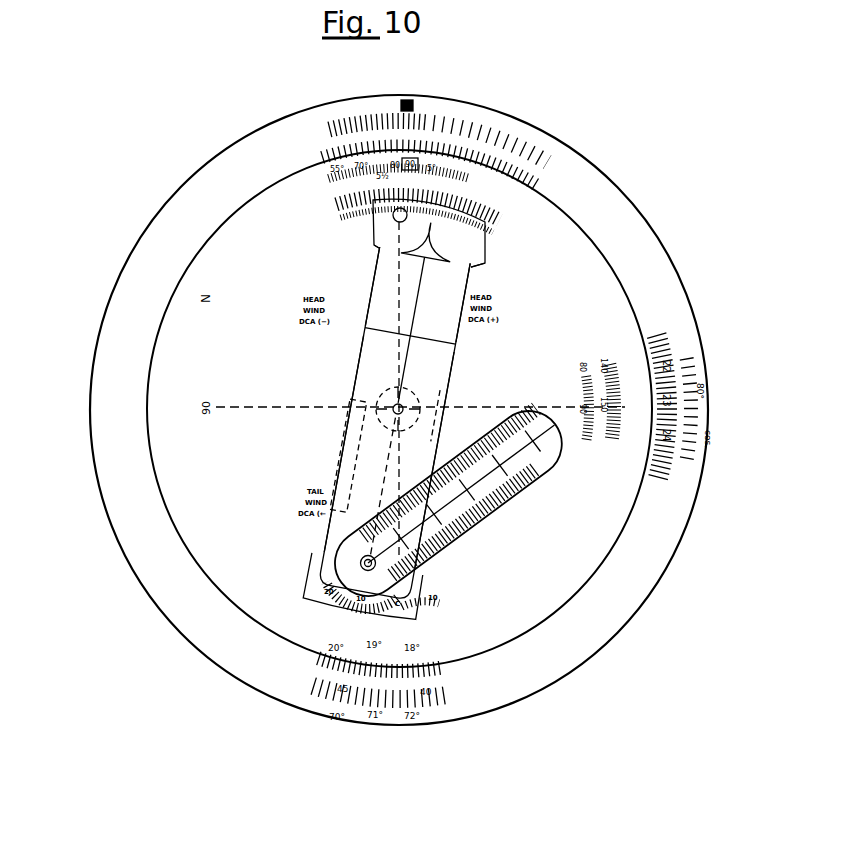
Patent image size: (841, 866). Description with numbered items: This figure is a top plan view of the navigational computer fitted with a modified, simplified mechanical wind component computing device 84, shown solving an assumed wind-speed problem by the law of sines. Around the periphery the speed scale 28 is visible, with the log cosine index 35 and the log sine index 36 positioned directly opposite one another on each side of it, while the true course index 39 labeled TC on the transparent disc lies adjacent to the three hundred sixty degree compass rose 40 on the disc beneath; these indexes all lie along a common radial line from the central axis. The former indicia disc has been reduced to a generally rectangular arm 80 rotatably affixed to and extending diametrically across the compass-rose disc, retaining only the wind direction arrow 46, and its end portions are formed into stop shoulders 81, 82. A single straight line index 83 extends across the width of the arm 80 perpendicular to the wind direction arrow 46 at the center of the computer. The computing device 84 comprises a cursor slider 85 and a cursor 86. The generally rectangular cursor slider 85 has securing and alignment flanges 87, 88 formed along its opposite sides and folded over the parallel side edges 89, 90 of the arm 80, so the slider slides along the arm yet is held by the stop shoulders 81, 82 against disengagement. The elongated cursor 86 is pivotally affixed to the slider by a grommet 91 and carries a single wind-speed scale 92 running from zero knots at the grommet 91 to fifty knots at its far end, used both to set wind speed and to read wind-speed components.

The speed scale 28 is at (382, 138).
The index 35 is at (408, 100).
The index 36 is at (433, 158).
The true course index 39 is at (395, 203).
The compass rose 40 is at (370, 192).
The wind direction arrow 46 is at (428, 239).
The arm 80 is at (395, 423).
The stop shoulder 81 is at (376, 246).
The stop shoulder 82 is at (373, 589).
The straight line index 83 is at (375, 424).
The wind-speed component computing device 84 is at (448, 503).
The cursor slider 85 is at (348, 455).
The cursor 86 is at (463, 492).
The securing and alignment flange 87 is at (343, 444).
The securing and alignment flange 88 is at (434, 460).
The side edge 89 is at (372, 286).
The side edge 90 is at (463, 302).
The grommet 91 is at (356, 566).
The wind-speed scale 92 is at (463, 497).